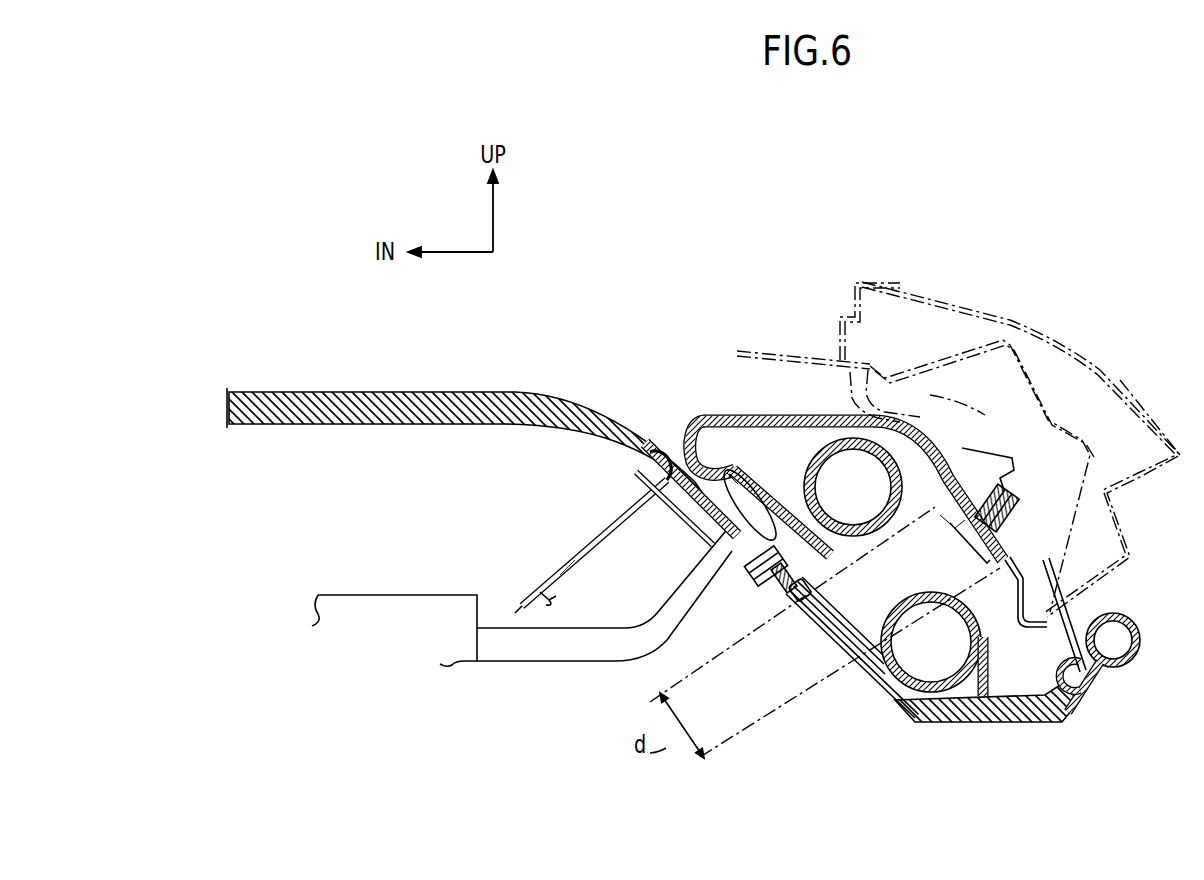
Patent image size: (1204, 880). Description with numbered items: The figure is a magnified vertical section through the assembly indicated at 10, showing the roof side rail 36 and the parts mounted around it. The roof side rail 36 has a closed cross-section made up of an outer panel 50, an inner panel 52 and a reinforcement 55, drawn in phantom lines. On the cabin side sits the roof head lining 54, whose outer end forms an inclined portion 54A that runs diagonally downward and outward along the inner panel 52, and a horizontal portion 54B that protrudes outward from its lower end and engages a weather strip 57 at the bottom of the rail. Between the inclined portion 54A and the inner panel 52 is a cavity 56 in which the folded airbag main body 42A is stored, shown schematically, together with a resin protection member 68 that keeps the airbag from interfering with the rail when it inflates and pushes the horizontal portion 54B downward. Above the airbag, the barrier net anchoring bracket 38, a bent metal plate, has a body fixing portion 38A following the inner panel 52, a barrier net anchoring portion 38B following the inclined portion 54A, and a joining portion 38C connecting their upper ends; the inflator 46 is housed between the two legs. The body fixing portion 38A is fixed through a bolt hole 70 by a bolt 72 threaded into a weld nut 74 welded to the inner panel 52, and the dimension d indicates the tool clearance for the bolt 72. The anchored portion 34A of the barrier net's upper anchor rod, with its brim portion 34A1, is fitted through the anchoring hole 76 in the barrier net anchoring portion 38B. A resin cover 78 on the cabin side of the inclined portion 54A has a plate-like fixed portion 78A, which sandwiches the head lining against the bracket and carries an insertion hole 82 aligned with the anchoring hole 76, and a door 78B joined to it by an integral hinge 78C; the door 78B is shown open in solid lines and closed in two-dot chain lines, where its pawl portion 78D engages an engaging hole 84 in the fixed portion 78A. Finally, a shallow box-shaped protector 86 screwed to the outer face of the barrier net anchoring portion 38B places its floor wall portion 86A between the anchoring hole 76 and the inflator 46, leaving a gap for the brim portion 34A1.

The vehicle door structure 10 is at (805, 390).
The anchored portion 34A is at (560, 662).
The brim portion 34A1 is at (690, 452).
The roof side rail 36 is at (1118, 381).
The barrier net anchoring bracket 38 is at (849, 509).
The body fixing portion 38A is at (950, 448).
The barrier net anchoring portion 38B is at (814, 597).
The joining portion 38C is at (702, 413).
The airbag main body 42A is at (905, 712).
The inflator 46 is at (843, 416).
The outer panel 50 is at (1070, 333).
The inner panel 52 is at (930, 388).
The roof head lining 54 is at (368, 392).
The inclined portion 54A is at (868, 700).
The horizontal portion 54B is at (975, 720).
The reinforcement 55 is at (978, 307).
The cavity 56 is at (876, 578).
The weather strip 57 is at (1100, 700).
The protection member 68 is at (1000, 640).
The bolt hole 70 is at (917, 558).
The bolt 72 is at (982, 562).
The weld nut 74 is at (1012, 522).
The anchoring hole 76 is at (727, 608).
The resin cover 78 is at (617, 536).
The fixed portion 78A is at (692, 525).
The door 78B is at (565, 538).
The integral hinge 78C is at (660, 450).
The pawl portion 78D is at (565, 598).
The insertion hole 82 is at (752, 560).
The engaging hole 84 is at (781, 600).
The protector 86 is at (762, 455).
The floor wall portion 86A is at (751, 467).